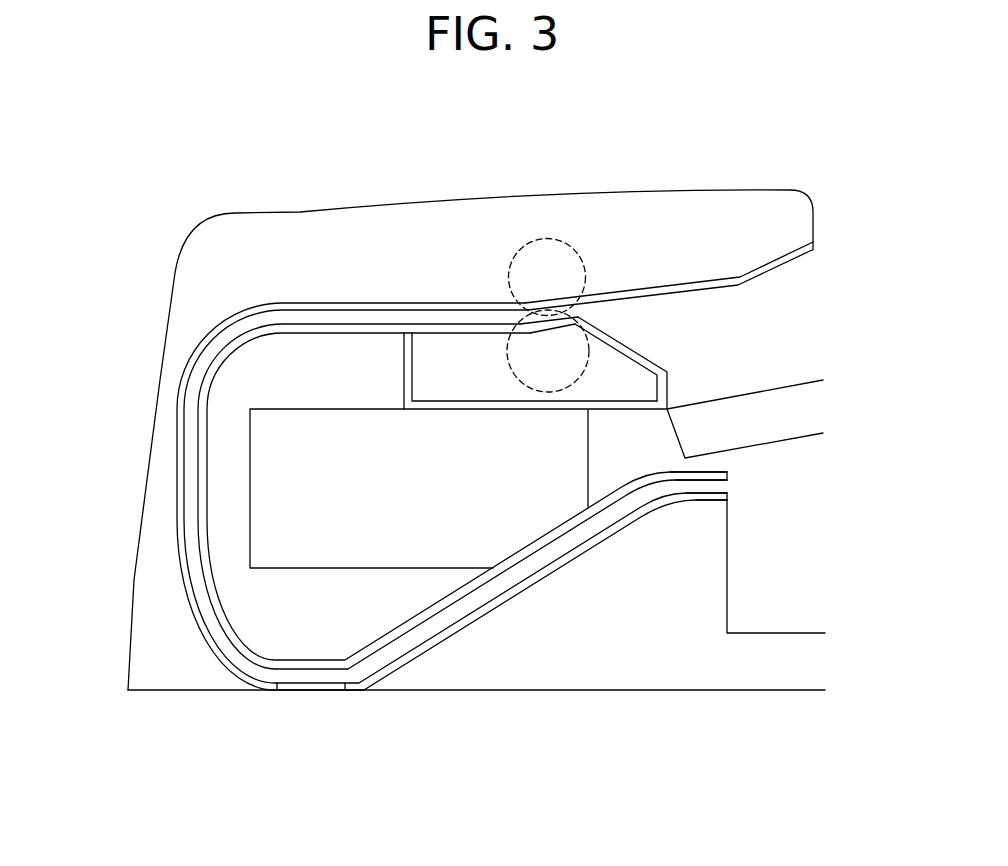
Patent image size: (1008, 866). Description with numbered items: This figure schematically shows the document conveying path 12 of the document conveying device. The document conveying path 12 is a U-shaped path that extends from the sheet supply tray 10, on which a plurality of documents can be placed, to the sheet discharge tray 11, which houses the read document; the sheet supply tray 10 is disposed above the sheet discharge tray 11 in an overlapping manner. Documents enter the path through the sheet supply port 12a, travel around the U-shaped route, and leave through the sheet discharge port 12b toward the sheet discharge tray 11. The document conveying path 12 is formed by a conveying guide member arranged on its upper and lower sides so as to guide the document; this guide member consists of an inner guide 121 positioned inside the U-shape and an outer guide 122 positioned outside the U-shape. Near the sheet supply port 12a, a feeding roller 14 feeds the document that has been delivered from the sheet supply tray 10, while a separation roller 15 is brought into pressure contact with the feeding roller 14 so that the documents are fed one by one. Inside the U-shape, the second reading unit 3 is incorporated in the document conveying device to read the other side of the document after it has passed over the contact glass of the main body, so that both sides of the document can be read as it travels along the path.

The second reading unit 3 is at (258, 442).
The sheet supply tray 10 is at (808, 380).
The sheet discharge tray 11 is at (810, 632).
The document conveying path 12 is at (459, 447).
The sheet supply port 12a is at (611, 315).
The sheet discharge port 12b is at (735, 482).
The feeding roller 14 is at (547, 238).
The separation roller 15 is at (580, 360).
The inner guide 121 is at (350, 333).
The outer guide 122 is at (390, 303).